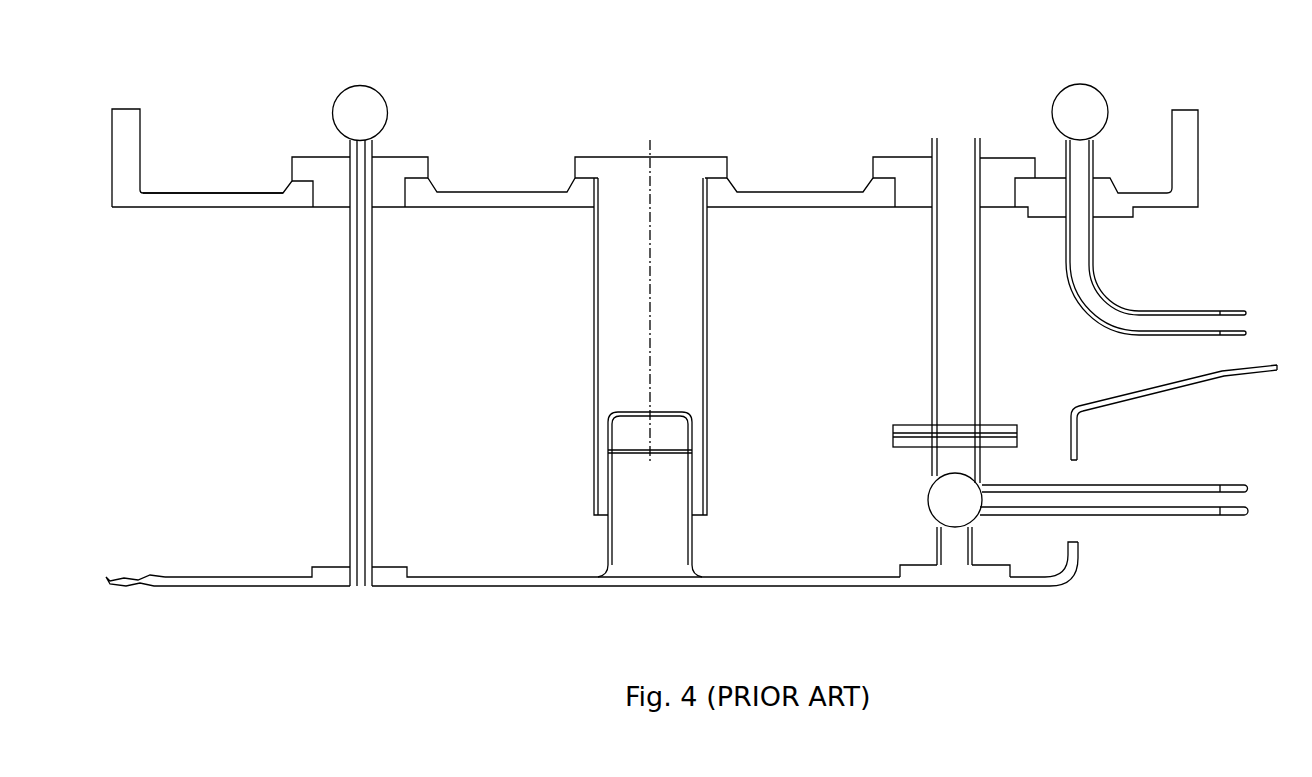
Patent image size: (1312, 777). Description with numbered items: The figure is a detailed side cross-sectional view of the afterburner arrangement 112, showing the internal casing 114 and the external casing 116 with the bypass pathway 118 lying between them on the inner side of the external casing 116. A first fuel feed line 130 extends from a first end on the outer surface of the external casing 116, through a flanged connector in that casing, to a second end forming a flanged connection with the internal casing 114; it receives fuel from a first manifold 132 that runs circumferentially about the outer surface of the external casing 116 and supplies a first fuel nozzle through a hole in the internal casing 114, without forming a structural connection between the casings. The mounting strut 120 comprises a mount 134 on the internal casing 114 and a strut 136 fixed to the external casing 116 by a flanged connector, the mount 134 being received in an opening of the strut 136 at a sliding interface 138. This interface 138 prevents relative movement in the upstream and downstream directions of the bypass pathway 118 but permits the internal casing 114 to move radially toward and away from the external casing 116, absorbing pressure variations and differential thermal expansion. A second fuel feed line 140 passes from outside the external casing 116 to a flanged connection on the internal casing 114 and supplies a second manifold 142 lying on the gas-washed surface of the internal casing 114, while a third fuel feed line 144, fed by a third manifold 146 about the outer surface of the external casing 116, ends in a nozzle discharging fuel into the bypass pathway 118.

The afterburner arrangement 112 is at (216, 113).
The internal casing 114 is at (267, 575).
The external casing 116 is at (266, 209).
The bypass pathway 118 is at (321, 320).
The mounting strut 120 is at (744, 148).
The first fuel feed line 130 is at (348, 378).
The first manifold 132 is at (386, 94).
The mount 134 is at (634, 531).
The strut 136 is at (621, 240).
The sliding interface 138 is at (692, 485).
The second fuel feed line 140 is at (930, 302).
The second manifold 142 is at (926, 489).
The third fuel feed line 144 is at (1114, 290).
The third manifold 146 is at (1060, 90).